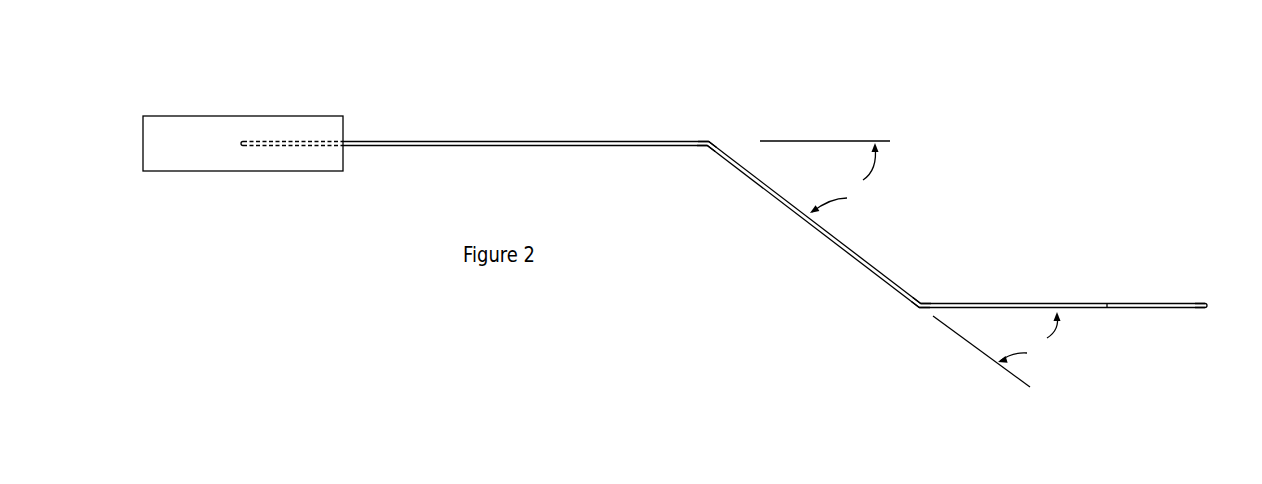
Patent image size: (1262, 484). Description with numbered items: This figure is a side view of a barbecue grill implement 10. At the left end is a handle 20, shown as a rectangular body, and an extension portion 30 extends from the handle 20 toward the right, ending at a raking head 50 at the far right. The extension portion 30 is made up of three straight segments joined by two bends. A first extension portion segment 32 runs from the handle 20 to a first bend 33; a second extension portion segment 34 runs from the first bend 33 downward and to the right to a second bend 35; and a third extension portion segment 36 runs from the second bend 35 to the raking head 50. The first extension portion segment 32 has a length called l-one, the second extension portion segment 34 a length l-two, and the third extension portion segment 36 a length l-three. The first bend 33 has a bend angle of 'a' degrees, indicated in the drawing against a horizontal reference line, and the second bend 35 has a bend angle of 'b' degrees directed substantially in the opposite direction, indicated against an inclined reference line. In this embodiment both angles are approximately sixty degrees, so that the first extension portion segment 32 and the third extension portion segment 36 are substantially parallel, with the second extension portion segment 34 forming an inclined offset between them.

The barbecue grill implement 10 is at (1087, 77).
The handle 20 is at (155, 116).
The extension portion 30 is at (676, 87).
The first extension portion segment 32 is at (513, 141).
The first bend 33 is at (708, 139).
The second extension portion segment 34 is at (820, 235).
The second bend 35 is at (922, 308).
The third extension portion segment 36 is at (1030, 302).
The raking head 50 is at (1202, 302).